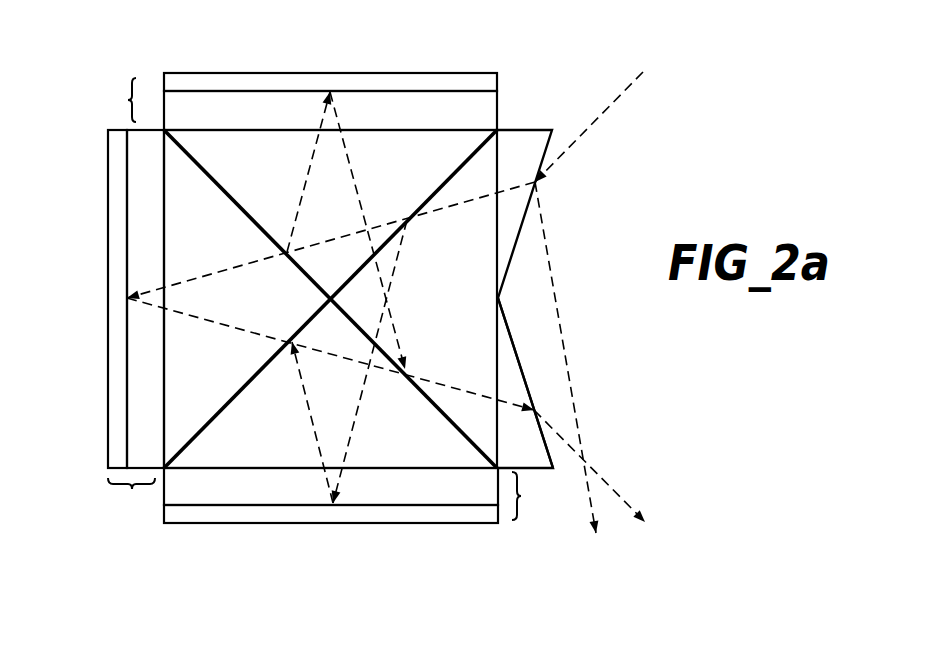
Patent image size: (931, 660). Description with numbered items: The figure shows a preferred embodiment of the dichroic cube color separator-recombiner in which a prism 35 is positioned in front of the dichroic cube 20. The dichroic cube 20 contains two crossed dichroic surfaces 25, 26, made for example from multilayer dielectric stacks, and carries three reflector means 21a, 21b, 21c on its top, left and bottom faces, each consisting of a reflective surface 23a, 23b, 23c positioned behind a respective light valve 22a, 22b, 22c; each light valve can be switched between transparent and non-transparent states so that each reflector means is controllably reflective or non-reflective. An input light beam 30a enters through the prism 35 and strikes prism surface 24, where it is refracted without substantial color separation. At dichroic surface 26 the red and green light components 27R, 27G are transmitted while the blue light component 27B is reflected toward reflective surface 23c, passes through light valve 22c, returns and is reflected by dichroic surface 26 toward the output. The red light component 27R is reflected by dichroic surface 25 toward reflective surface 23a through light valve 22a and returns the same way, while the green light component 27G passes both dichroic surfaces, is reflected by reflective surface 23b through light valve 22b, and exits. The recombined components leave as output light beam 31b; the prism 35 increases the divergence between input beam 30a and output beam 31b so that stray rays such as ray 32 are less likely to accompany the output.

The dichroic cube 20 is at (527, 248).
The reflector means 21a is at (125, 99).
The reflector means 21b is at (133, 492).
The reflector means 21c is at (522, 495).
The light valve 22a is at (413, 105).
The light valve 22b is at (143, 372).
The light valve 22c is at (420, 488).
The reflective surface 23a is at (285, 82).
The reflective surface 23b is at (115, 237).
The reflective surface 23c is at (288, 513).
The prism surface 24 is at (500, 152).
The dichroic surface 25 is at (218, 182).
The dichroic surface 26 is at (212, 421).
The red light component 27R is at (372, 184).
The green light component 27G is at (210, 313).
The blue light component 27B is at (318, 433).
The input light beam 30a is at (617, 85).
The output light beam 31b is at (637, 503).
The ray 32 is at (602, 525).
The prism 35 is at (530, 392).